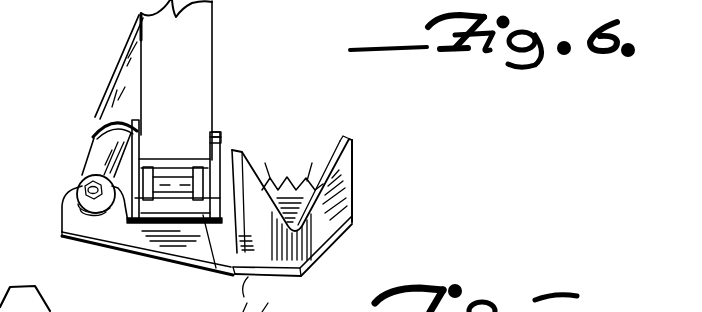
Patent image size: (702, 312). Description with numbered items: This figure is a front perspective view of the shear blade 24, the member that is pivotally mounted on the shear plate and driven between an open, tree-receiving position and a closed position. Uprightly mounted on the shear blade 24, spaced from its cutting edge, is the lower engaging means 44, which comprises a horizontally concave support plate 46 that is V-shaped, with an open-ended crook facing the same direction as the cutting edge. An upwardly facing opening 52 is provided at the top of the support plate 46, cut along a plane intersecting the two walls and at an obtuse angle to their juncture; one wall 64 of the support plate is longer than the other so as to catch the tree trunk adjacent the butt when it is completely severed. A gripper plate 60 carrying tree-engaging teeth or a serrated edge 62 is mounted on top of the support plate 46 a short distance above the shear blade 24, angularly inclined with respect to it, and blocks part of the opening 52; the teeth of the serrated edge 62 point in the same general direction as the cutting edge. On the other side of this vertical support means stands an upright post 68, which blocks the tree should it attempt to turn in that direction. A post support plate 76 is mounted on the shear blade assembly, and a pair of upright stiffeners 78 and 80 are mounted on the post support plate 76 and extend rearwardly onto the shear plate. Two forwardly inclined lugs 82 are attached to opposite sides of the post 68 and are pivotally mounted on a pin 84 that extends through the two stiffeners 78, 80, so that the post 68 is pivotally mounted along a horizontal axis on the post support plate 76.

The upright post 68 is at (203, 64).
The upright stiffener 78 is at (62, 234).
The post support plate 76 is at (128, 226).
The shear blade 24 is at (140, 222).
The pin 84 is at (181, 198).
The upright stiffener 80 is at (202, 222).
The lugs 82 is at (220, 138).
The lower engaging means 44 is at (352, 197).
The wall of the support plate 64 is at (349, 174).
The support plate 46 is at (352, 214).
The upwardly facing opening 52 is at (285, 158).
The gripper plate 60 is at (268, 158).
The serrated edge 62 is at (319, 159).